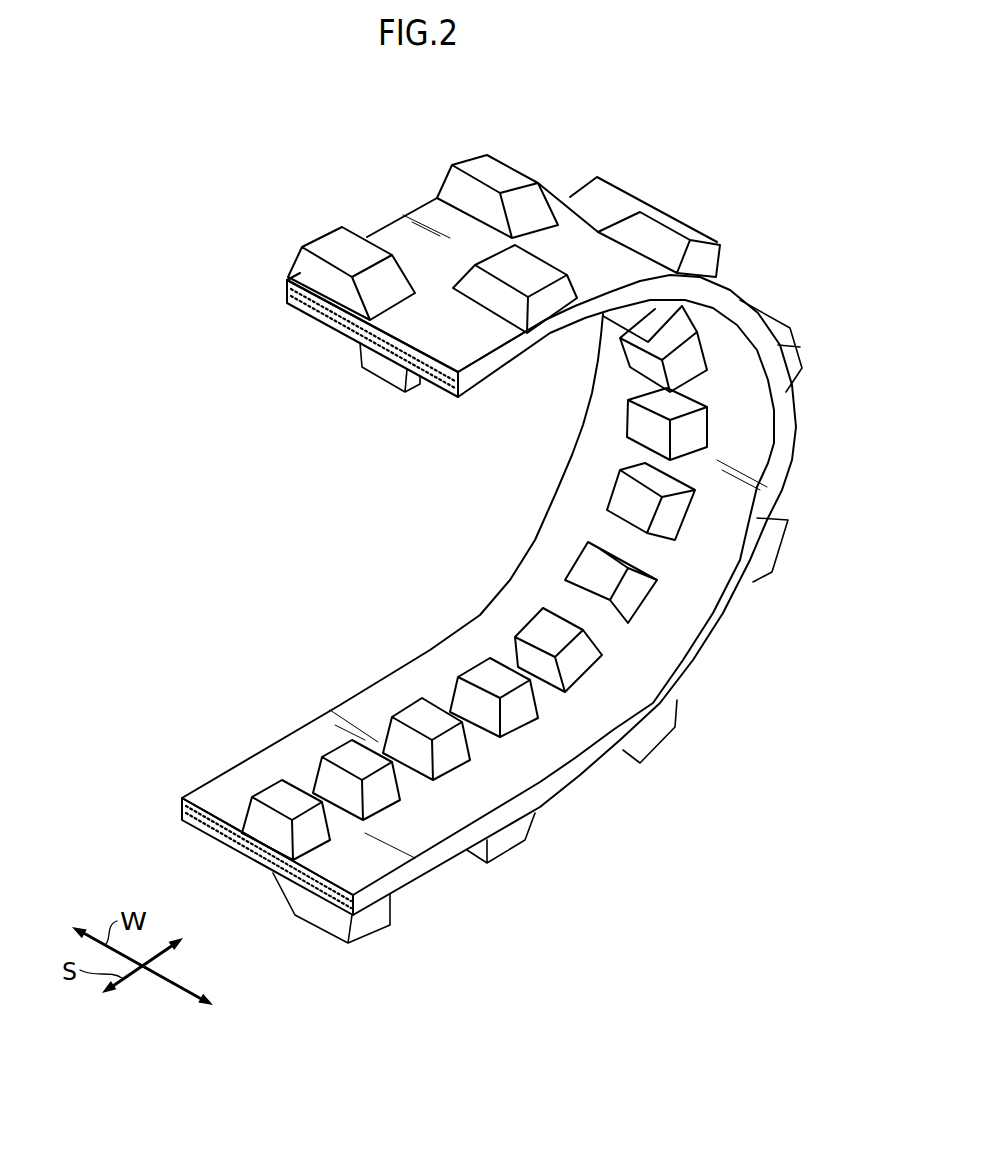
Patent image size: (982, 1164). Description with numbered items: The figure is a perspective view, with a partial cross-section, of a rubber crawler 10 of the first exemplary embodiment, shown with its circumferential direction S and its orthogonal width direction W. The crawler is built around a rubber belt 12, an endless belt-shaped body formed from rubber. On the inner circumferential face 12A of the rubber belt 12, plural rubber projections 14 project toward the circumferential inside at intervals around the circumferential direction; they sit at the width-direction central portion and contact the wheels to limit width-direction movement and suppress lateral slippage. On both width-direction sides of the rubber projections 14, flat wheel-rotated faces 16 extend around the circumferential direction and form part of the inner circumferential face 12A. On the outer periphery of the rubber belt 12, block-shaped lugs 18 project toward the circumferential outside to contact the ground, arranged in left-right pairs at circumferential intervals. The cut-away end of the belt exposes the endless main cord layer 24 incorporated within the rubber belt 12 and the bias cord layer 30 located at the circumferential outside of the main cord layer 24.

The rubber crawler 10 is at (216, 190).
The rubber belt 12 is at (385, 219).
The inner circumferential face 12A is at (239, 797).
The rubber projections 14 is at (400, 707).
The wheel-rotated faces 16 is at (433, 685).
The lugs 18 is at (330, 232).
The main cord layer 24 is at (195, 814).
The bias cord layer 30 is at (198, 822).